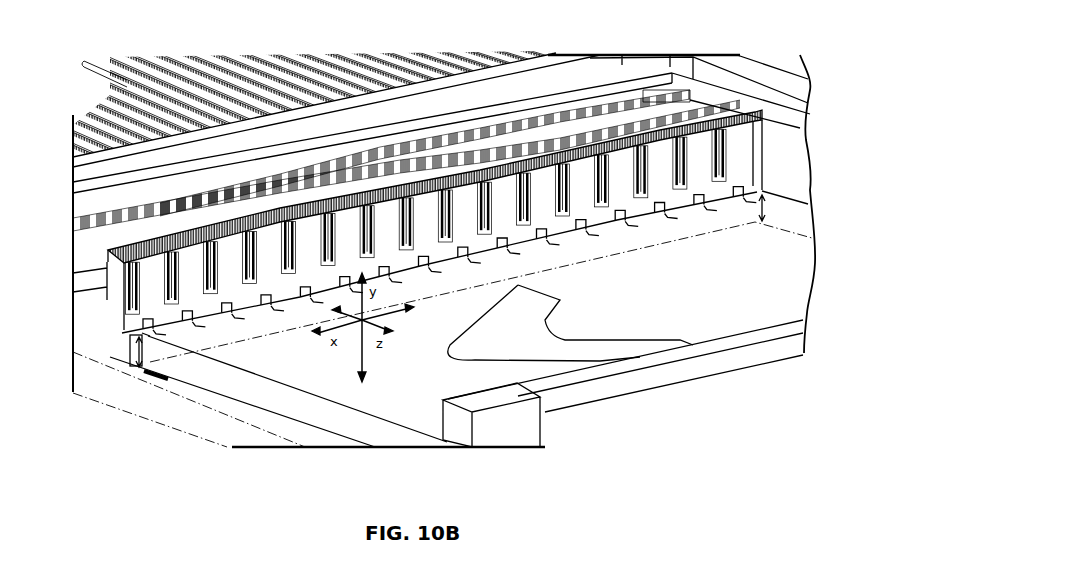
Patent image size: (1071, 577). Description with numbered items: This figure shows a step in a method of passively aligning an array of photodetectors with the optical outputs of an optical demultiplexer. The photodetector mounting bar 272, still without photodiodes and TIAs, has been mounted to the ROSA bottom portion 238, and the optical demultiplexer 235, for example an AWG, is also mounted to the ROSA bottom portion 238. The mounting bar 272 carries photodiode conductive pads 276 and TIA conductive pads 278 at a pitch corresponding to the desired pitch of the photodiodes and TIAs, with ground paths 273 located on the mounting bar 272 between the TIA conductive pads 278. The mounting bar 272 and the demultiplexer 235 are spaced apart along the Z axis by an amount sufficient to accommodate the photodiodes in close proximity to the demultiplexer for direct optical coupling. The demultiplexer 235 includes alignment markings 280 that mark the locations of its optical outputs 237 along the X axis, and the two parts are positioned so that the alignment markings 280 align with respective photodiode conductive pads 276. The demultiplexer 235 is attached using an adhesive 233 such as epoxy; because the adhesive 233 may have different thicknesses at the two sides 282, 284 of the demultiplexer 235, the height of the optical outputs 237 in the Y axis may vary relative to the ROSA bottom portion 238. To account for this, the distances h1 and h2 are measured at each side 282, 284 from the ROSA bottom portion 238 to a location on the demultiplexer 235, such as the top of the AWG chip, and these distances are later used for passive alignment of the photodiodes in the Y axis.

The photodetector mounting bar 272 is at (113, 264).
The TIA conductive pads 278 is at (145, 268).
The alignment markings 280 is at (237, 313).
The ground paths 273 is at (167, 292).
The side of the optical demultiplexer 284 is at (766, 192).
The optical outputs 237 is at (160, 330).
The side of the optical demultiplexer 282 is at (140, 331).
The photodiode conductive pads 276 is at (143, 325).
The adhesive 233 is at (157, 378).
The optical demultiplexer 235 is at (280, 405).
The ROSA bottom portion 238 is at (190, 423).